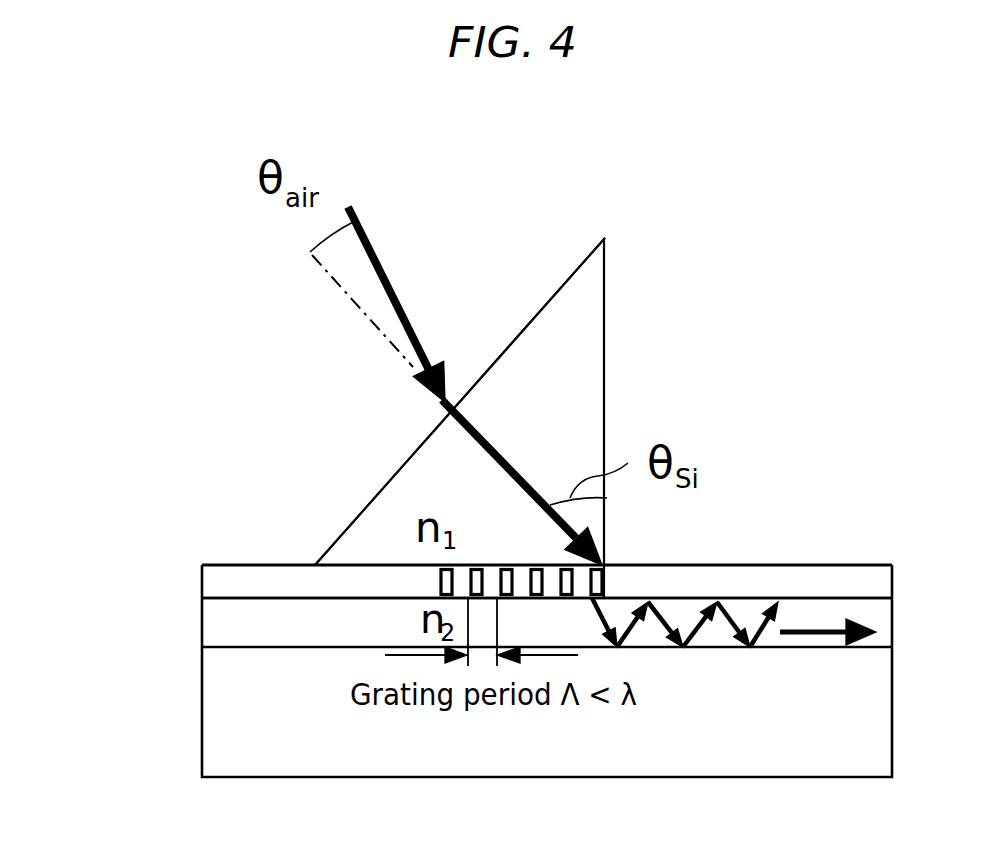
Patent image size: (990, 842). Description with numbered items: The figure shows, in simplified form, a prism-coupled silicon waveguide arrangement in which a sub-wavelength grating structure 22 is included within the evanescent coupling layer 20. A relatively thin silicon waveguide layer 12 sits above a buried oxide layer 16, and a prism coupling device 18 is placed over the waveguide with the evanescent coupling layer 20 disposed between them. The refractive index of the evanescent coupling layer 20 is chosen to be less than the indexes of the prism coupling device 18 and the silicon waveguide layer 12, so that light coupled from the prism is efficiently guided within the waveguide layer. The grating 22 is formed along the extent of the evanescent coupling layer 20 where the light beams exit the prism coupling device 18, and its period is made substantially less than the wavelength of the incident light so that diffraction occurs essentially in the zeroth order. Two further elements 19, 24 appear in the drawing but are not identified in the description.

The silicon waveguide layer 12 is at (222, 630).
The buried oxide layer 16 is at (222, 748).
The prism coupling device 18 is at (576, 284).
The prism entrance face 19 is at (378, 487).
The evanescent coupling layer 20 is at (243, 578).
The sub-wavelength grating structure 22 is at (602, 578).
The grating 24 is at (603, 543).